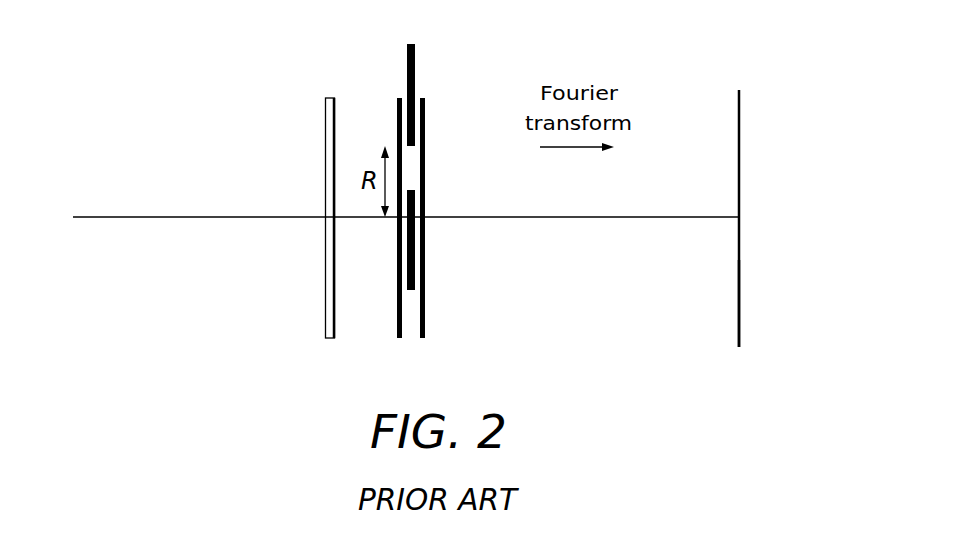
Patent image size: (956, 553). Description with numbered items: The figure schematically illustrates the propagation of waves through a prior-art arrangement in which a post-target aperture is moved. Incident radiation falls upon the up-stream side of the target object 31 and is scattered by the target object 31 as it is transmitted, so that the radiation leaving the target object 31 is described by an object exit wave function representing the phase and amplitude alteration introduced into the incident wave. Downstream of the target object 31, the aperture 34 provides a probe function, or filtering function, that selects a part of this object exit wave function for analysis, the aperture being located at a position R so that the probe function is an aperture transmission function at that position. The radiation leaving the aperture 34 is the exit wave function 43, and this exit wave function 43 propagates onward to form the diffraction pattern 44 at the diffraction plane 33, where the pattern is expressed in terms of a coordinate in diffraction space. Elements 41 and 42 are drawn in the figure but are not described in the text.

The target object 31 is at (325, 310).
The first mask plate 41 is at (397, 310).
The aperture 34 is at (415, 62).
The aperture gap 42 is at (406, 78).
The exit wave function 43 is at (425, 287).
The diffraction plane 33 is at (739, 122).
The diffraction pattern 44 is at (739, 288).